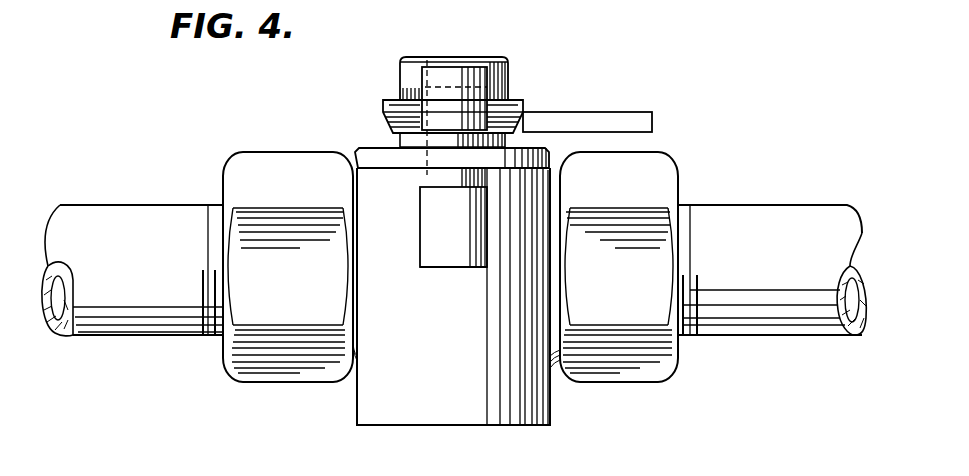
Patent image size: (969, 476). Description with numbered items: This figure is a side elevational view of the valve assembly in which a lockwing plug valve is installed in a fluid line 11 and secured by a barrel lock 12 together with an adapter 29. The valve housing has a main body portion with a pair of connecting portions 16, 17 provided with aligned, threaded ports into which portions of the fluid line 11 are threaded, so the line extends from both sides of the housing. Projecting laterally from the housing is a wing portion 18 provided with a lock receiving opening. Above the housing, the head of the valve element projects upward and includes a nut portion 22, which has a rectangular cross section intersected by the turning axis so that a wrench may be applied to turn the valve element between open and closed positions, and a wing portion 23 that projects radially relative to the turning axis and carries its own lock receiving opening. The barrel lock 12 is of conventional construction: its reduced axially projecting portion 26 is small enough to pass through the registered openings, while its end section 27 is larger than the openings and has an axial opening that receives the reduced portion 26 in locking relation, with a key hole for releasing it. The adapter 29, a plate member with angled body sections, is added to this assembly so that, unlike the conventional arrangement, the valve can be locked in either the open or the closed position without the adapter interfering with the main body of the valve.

The fluid line 11 is at (115, 203).
The barrel lock 12 is at (429, 270).
The connecting portion 16 is at (258, 383).
The connecting portion 17 is at (597, 383).
The wing portion 18 is at (361, 149).
The nut portion 22 is at (483, 57).
The wing portion 23 is at (633, 112).
The axially projecting portion 26 is at (421, 190).
The end section 27 is at (412, 78).
The adapter 29 is at (521, 101).